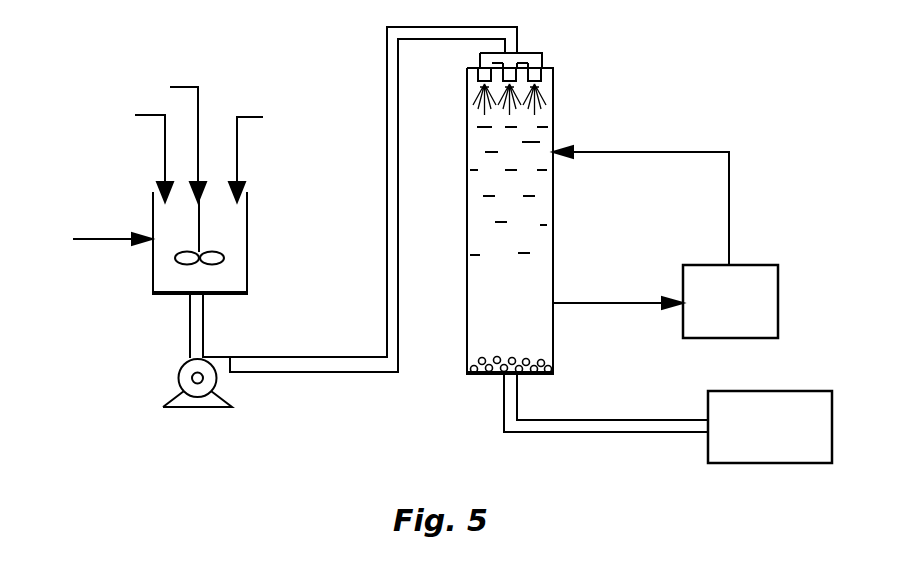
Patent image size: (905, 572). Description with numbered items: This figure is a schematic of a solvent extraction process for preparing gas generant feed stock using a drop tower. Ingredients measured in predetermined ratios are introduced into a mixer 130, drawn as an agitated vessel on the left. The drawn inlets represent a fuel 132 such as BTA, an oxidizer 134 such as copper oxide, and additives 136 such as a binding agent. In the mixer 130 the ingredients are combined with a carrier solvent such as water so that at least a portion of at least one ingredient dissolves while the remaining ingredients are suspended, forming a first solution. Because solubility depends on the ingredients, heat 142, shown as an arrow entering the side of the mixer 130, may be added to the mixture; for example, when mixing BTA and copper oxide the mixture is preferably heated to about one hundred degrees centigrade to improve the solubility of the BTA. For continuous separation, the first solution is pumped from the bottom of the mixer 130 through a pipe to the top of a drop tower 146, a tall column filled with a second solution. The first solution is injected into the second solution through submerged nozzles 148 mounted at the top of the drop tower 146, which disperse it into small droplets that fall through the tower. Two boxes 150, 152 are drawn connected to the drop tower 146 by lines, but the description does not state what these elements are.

The mixer 130 is at (250, 258).
The fuel 132 is at (150, 113).
The oxidizer 134 is at (185, 83).
The additives 136 is at (248, 113).
The heat 142 is at (102, 237).
The drop tower 146 is at (553, 122).
The submerged nozzles 148 is at (510, 63).
The downstream unit 150 is at (792, 440).
The recycle unit 152 is at (751, 316).